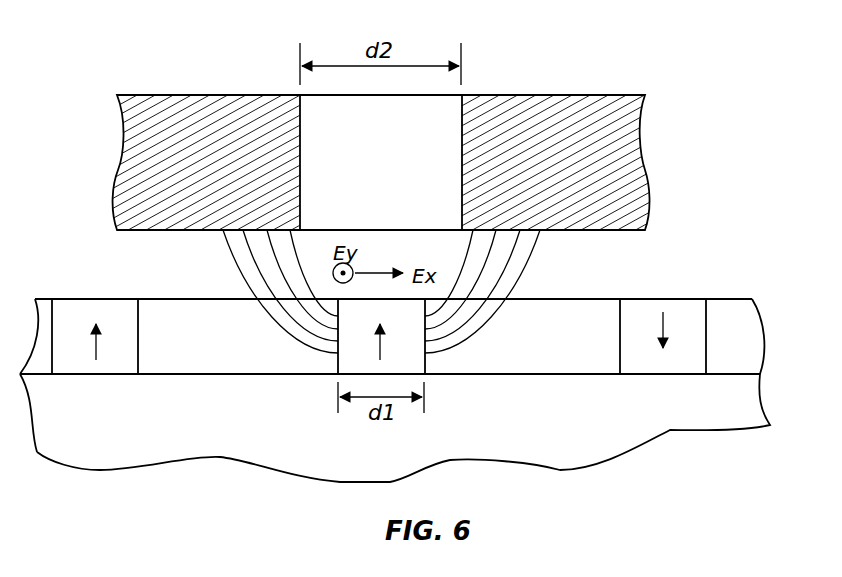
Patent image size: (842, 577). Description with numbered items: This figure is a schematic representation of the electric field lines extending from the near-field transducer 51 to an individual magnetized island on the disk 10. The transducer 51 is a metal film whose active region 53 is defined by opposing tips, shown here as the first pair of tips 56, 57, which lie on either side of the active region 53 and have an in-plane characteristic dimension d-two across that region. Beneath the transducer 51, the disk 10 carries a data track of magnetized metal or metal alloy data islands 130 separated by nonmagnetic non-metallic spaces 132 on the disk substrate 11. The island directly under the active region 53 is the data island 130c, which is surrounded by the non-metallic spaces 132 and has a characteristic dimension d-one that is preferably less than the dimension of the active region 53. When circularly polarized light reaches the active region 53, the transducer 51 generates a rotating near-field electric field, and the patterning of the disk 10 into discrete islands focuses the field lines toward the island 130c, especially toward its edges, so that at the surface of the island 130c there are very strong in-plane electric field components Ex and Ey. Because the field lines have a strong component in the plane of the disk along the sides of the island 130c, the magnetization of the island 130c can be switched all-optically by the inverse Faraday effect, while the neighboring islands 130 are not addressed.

The disk 10 is at (419, 401).
The disk substrate 11 is at (419, 354).
The near-field transducer 51 is at (400, 265).
The active region 53 is at (438, 118).
The tip 56 is at (145, 222).
The tip 57 is at (610, 220).
The data islands 130 is at (113, 367).
The data island 130c is at (422, 369).
The nonmagnetic non-metallic spaces 132 is at (231, 367).